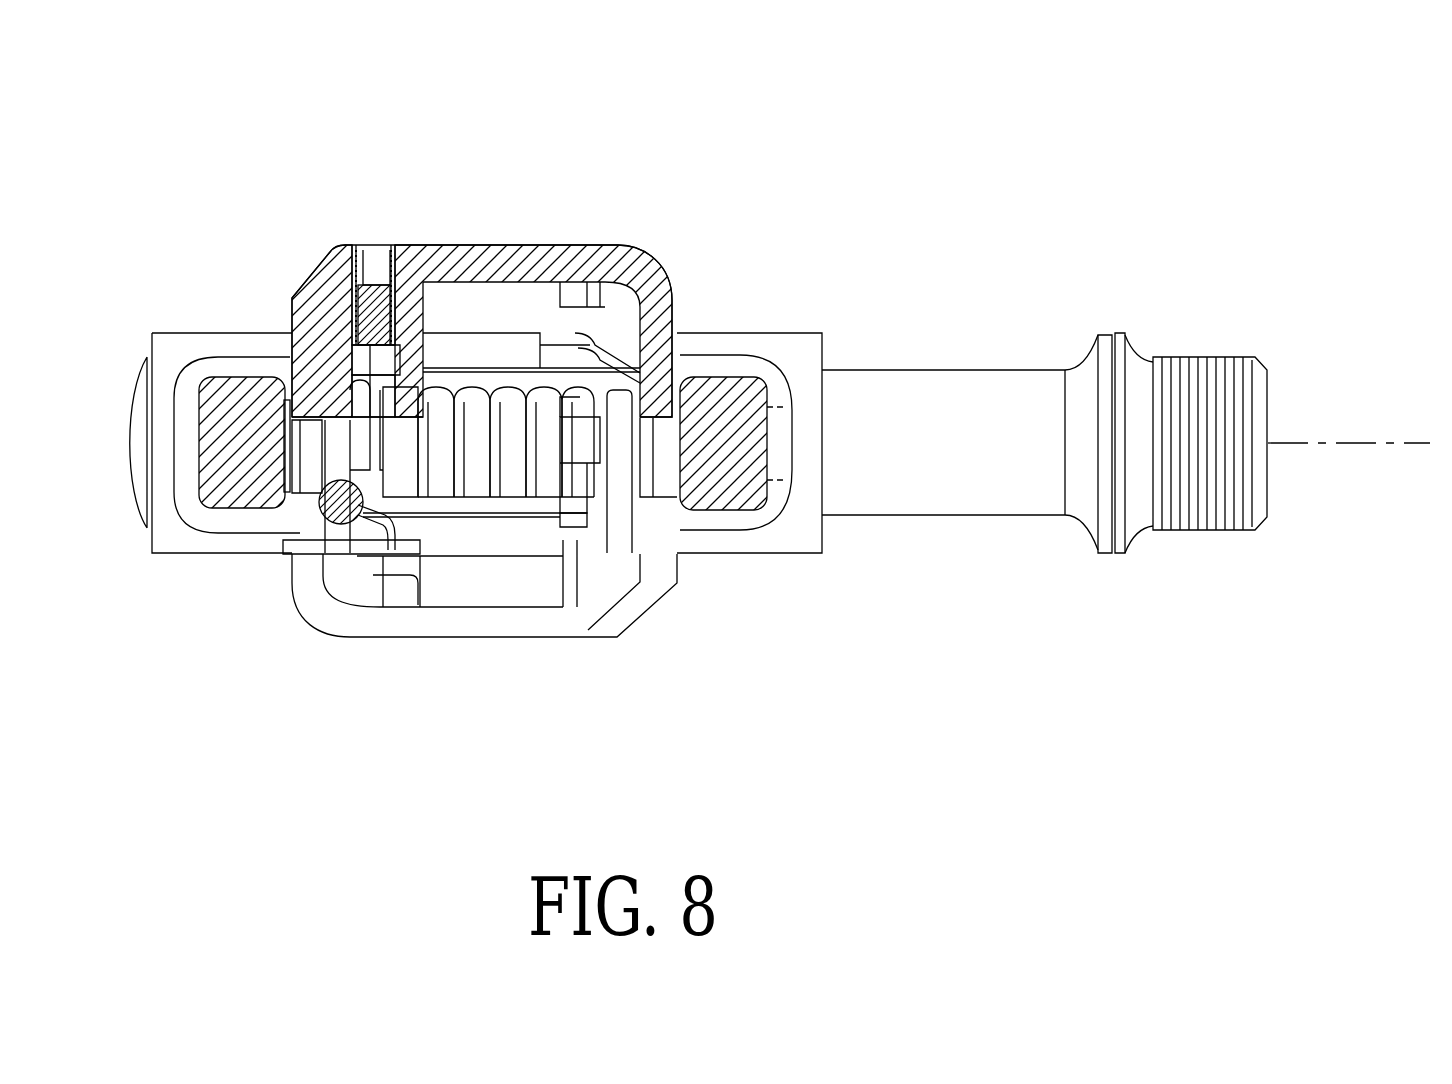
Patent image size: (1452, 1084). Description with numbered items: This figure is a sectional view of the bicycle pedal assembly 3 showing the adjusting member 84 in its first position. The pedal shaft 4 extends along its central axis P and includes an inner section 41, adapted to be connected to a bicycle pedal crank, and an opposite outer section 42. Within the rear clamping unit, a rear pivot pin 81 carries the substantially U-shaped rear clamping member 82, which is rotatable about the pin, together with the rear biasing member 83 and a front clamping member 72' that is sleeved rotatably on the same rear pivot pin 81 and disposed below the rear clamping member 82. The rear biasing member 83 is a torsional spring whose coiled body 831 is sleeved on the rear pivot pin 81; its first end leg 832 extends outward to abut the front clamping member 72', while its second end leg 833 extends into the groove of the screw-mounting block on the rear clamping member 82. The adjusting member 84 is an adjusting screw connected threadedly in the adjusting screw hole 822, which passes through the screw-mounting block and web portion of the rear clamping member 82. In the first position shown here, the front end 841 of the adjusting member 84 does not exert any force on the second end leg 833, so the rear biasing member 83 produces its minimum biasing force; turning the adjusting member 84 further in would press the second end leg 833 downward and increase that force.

The bicycle pedal assembly 3 is at (780, 300).
The pedal shaft 4 is at (1002, 288).
The inner section 41 is at (1205, 372).
The outer section 42 is at (897, 400).
The front clamping member 72' is at (403, 561).
The rear pivot pin 81 is at (598, 448).
The rear clamping member 82 is at (530, 240).
The adjusting screw hole 822 is at (352, 285).
The rear biasing member 83 is at (476, 503).
The coiled body 831 is at (428, 470).
The first end leg 832 is at (576, 522).
The second end leg 833 is at (433, 360).
The adjusting member 84 is at (375, 250).
The front end 841 is at (355, 310).
The central axis P is at (1395, 440).